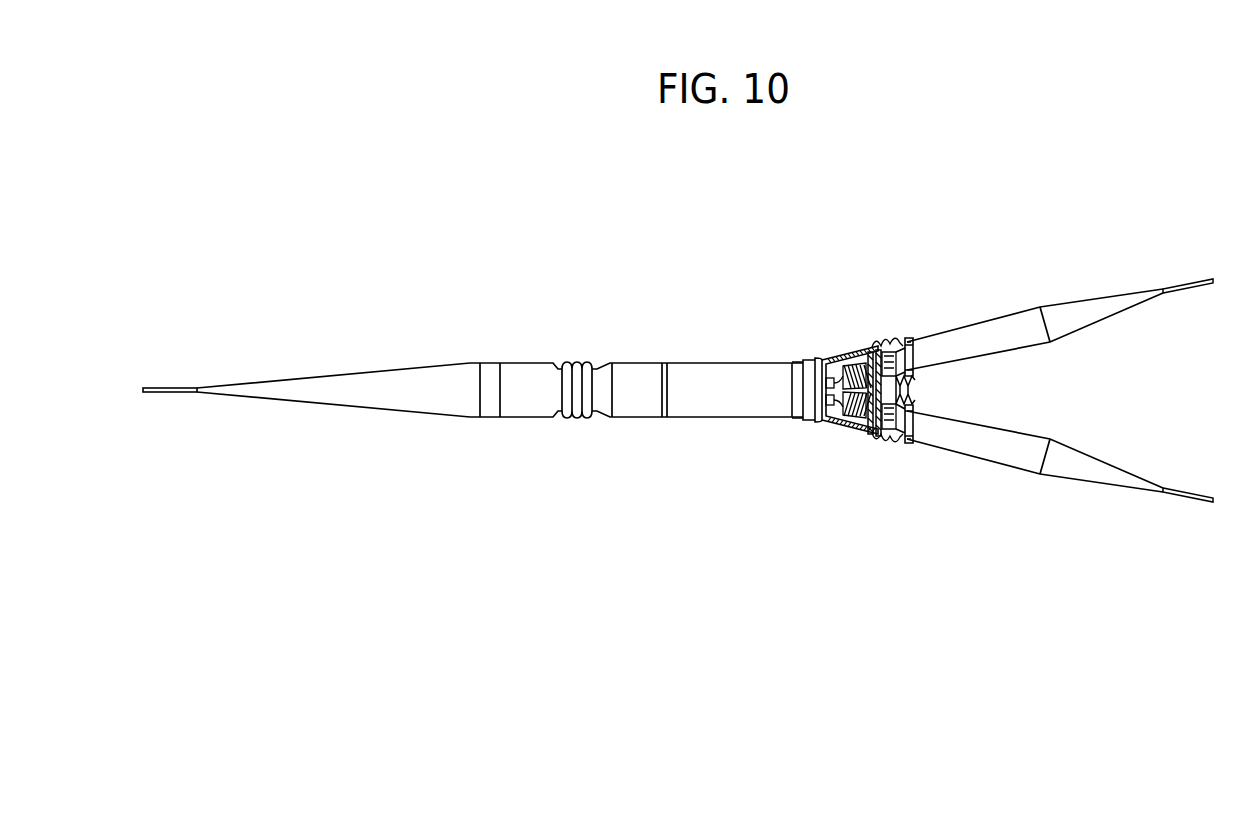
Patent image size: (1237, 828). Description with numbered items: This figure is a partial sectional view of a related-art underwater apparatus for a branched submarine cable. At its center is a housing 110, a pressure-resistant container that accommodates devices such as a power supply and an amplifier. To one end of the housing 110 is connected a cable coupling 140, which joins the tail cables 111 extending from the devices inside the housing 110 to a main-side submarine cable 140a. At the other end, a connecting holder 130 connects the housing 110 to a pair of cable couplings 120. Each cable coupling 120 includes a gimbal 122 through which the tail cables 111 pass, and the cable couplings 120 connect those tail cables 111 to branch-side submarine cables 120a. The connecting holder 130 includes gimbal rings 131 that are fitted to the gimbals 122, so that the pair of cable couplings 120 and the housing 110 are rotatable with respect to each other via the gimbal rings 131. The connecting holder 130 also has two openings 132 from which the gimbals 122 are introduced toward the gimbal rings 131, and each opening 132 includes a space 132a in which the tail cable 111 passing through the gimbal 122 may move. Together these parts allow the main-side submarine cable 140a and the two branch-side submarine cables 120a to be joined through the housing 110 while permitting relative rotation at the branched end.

The housing 110 is at (722, 363).
The tail cables 111 is at (797, 362).
The cable couplings 120 is at (1004, 302).
The branch-side submarine cables 120a is at (1188, 284).
The gimbals 122 is at (898, 348).
The connecting holder 130 is at (851, 340).
The gimbal rings 131 is at (874, 345).
The openings 132 is at (912, 406).
The space 132a is at (843, 354).
The cable coupling 140 is at (421, 368).
The main-side submarine cable 140a is at (163, 388).